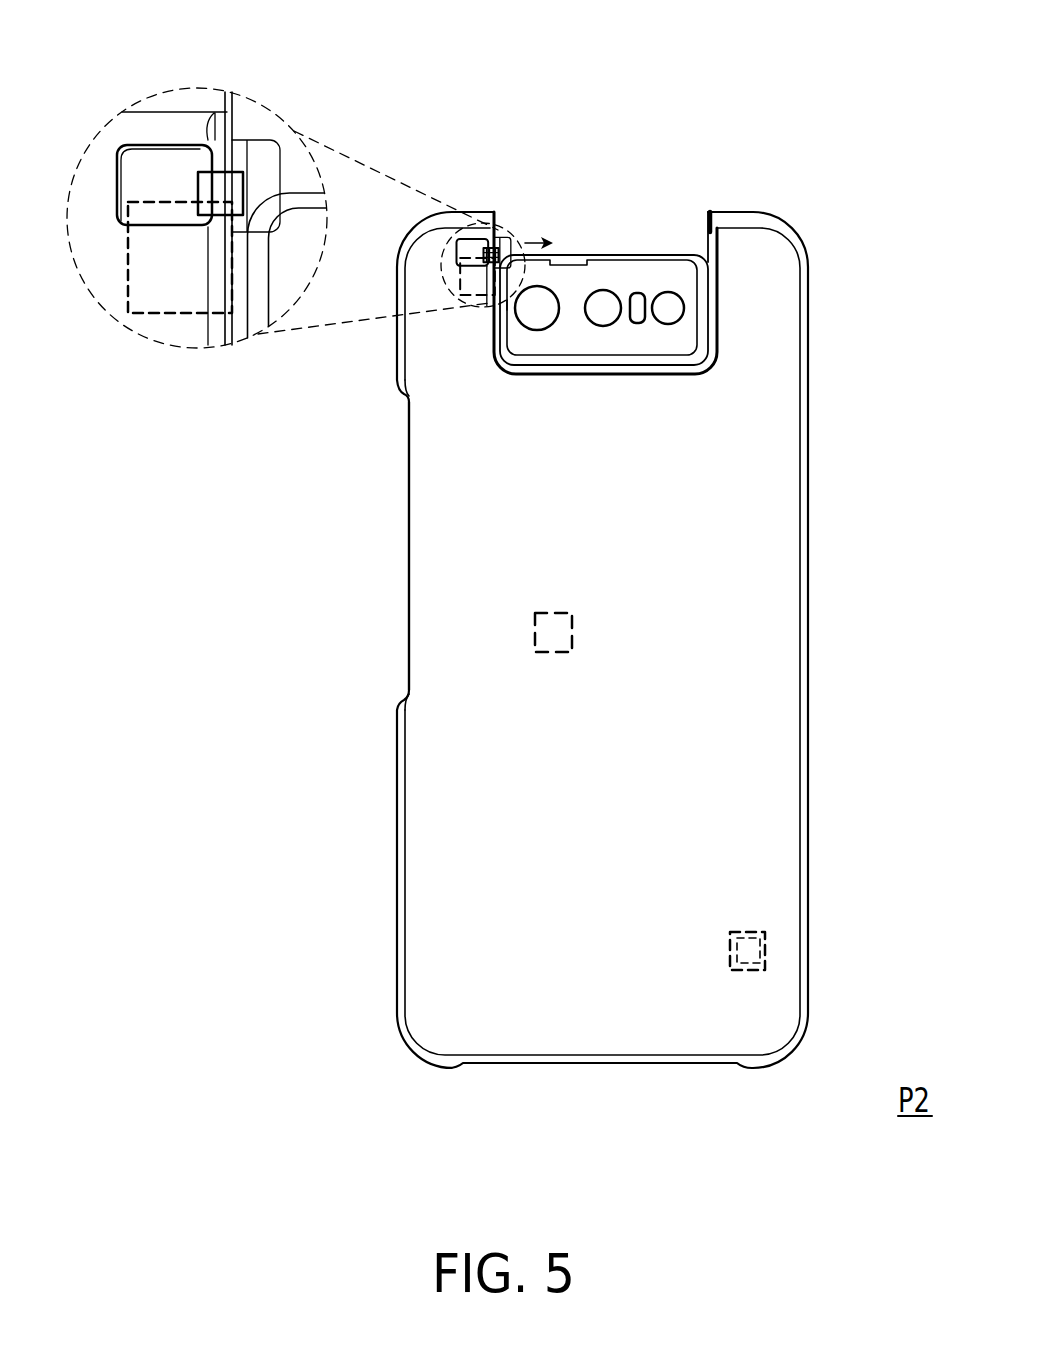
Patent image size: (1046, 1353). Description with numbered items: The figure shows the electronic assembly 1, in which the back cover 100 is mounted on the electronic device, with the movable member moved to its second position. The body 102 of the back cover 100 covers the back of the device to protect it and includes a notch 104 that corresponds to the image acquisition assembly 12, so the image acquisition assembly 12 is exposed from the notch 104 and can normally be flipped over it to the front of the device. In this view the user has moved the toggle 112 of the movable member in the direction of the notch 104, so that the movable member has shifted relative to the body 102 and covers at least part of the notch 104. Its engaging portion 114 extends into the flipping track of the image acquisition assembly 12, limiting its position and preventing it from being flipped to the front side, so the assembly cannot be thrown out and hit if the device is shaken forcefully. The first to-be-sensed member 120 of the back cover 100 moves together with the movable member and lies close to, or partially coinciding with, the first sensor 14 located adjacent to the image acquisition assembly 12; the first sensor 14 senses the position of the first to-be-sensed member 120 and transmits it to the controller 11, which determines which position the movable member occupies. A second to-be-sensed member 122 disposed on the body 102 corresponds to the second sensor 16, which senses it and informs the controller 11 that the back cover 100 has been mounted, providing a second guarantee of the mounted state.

The electronic assembly 1 is at (466, 96).
The controller 11 is at (535, 624).
The image acquisition assembly 12 is at (608, 277).
The first sensor 14 is at (177, 314).
The second sensor 16 is at (752, 932).
The back cover 100 is at (808, 620).
The body 102 is at (437, 445).
The notch 104 is at (706, 252).
The toggle 112 is at (200, 166).
The engaging portion 114 is at (270, 162).
The first to-be-sensed member 120 is at (200, 193).
The second to-be-sensed member 122 is at (765, 952).